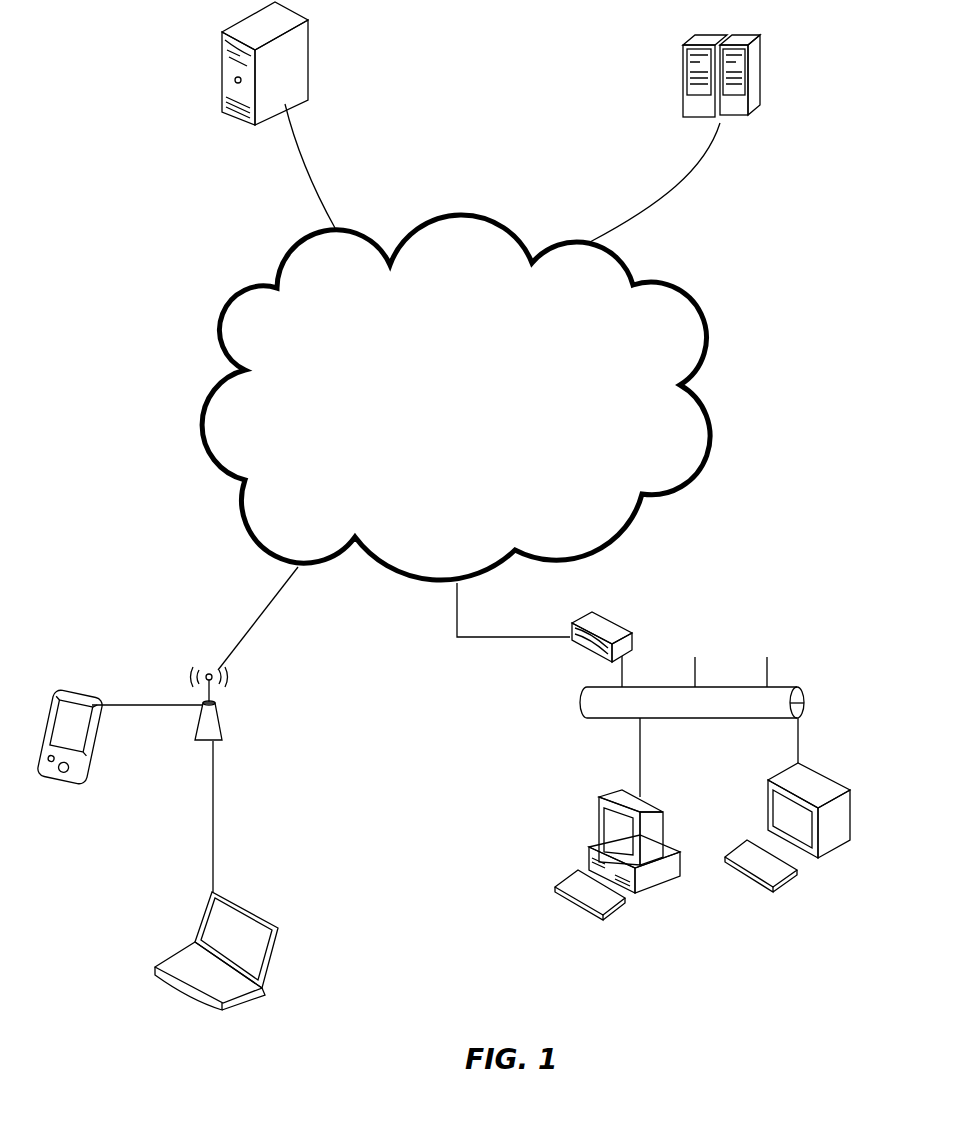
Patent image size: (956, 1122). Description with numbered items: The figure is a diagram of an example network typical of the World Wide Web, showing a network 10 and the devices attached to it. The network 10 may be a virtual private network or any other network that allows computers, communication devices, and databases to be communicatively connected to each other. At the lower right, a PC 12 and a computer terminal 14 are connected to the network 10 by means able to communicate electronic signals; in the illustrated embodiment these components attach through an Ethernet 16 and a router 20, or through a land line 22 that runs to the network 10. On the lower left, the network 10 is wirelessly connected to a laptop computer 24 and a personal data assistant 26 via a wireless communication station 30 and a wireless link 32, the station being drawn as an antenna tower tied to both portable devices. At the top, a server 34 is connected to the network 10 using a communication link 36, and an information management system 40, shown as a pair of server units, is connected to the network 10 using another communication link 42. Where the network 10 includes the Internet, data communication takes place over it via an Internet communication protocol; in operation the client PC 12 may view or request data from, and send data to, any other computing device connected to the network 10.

The network 10 is at (223, 312).
The PC 12 is at (595, 840).
The computer terminal 14 is at (832, 782).
The Ethernet 16 is at (795, 687).
The router 20 is at (632, 633).
The land line 22 is at (495, 638).
The laptop computer 24 is at (238, 1000).
The personal data assistant 26 is at (74, 693).
The wireless communication station 30 is at (222, 733).
The wireless link 32 is at (251, 624).
The server 34 is at (308, 62).
The communication link 36 is at (320, 203).
The information management system 40 is at (755, 113).
The communication link 42 is at (680, 185).